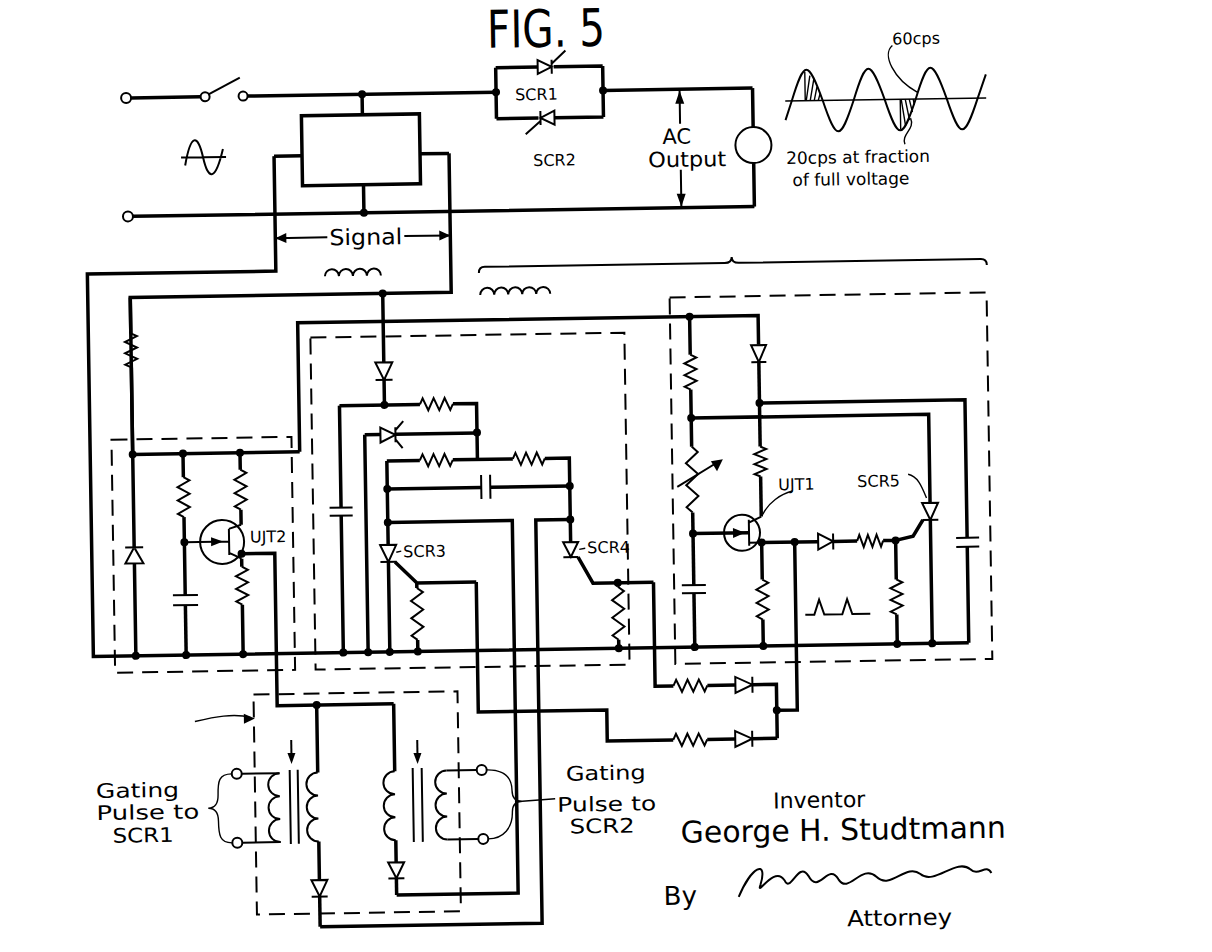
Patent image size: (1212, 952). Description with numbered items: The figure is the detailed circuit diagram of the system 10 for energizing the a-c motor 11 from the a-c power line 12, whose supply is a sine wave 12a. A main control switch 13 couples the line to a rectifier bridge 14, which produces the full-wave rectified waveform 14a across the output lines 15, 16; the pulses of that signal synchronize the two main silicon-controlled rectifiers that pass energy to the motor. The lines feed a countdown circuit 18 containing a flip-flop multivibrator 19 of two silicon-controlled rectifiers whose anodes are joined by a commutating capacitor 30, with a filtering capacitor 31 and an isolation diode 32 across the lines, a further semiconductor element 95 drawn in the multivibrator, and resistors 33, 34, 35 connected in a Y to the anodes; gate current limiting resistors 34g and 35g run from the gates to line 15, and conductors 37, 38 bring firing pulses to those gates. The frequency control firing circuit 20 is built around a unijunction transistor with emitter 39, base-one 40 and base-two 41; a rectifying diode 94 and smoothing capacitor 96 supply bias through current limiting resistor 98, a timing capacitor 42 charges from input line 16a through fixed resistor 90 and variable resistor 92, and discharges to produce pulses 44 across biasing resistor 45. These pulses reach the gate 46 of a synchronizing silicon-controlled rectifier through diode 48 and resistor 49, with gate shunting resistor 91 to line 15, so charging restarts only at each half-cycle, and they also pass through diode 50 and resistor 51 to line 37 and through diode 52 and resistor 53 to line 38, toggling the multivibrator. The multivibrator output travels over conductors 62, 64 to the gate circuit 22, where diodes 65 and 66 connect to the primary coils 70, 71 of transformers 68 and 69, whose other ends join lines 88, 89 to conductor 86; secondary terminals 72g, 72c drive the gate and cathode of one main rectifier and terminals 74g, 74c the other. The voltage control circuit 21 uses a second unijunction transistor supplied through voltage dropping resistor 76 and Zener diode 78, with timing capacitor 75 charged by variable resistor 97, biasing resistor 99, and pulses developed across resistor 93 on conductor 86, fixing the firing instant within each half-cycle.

The system 10 is at (900, 248).
The electric a-c motor 11 is at (746, 136).
The a-c power line 12 is at (417, 152).
The sine wave 12a is at (196, 165).
The main control switch 13 is at (224, 104).
The rectifier bridge 14 is at (433, 123).
The rectified voltage waveform 14a is at (386, 268).
The output line 15 is at (234, 266).
The output line 16 is at (243, 292).
The input line 16a is at (586, 318).
The countdown circuit 18 is at (732, 247).
The multivibrator 19 is at (469, 501).
The frequency control firing circuit 20 is at (831, 477).
The voltage control circuit 21 is at (203, 526).
The gate circuit 22 is at (279, 804).
The commutating capacitor 30 is at (494, 488).
The filtering capacitor 31 is at (338, 503).
The isolation diode 32 is at (377, 368).
The current limiting and biasing resistor 33 is at (478, 391).
The current limiting and biasing resistor 34 is at (481, 432).
The gate current limiting resistor 34g is at (436, 621).
The current limiting and biasing resistor 35 is at (537, 452).
The gate current limiting resistor 35g is at (612, 611).
The conductor 37 is at (657, 745).
The conductor 38 is at (651, 672).
The emitter 39 is at (690, 530).
The base-one 40 is at (756, 553).
The base-two 41 is at (766, 524).
The timing capacitor 42 is at (704, 596).
The pulses 44 is at (838, 595).
The biasing resistor 45 is at (757, 622).
The gate 46 is at (913, 536).
The diode 48 is at (822, 538).
The resistor 49 is at (870, 550).
The diode 50 is at (749, 747).
The resistor 51 is at (690, 746).
The diode 52 is at (737, 692).
The resistor 53 is at (686, 693).
The conductor 62 is at (510, 583).
The conductor 64 is at (537, 736).
The diode 65 is at (383, 867).
The diode 66 is at (306, 881).
The transformer 68 is at (419, 737).
The transformer 69 is at (288, 738).
The primary coil 70 is at (378, 804).
The primary coil 71 is at (326, 820).
The terminal 72g is at (477, 764).
The terminal 72c is at (478, 843).
The terminal 74g is at (232, 763).
The terminal 74c is at (230, 845).
The timing capacitor 75 is at (181, 602).
The voltage dropping resistor 76 is at (141, 342).
The Zener diode 78 is at (141, 540).
The conductor 86 is at (273, 676).
The line 88 is at (386, 762).
The line 89 is at (315, 750).
The fixed resistor 90 is at (700, 375).
The gate shunting resistor 91 is at (898, 598).
The variable resistor 92 is at (678, 458).
The resistor 93 is at (237, 584).
The rectifying diode 94 is at (752, 352).
The programmable unijunction 95 is at (380, 428).
The smoothing capacitor 96 is at (962, 558).
The variable resistor 97 is at (187, 510).
The current limiting resistor 98 is at (768, 456).
The resistor 99 is at (245, 478).